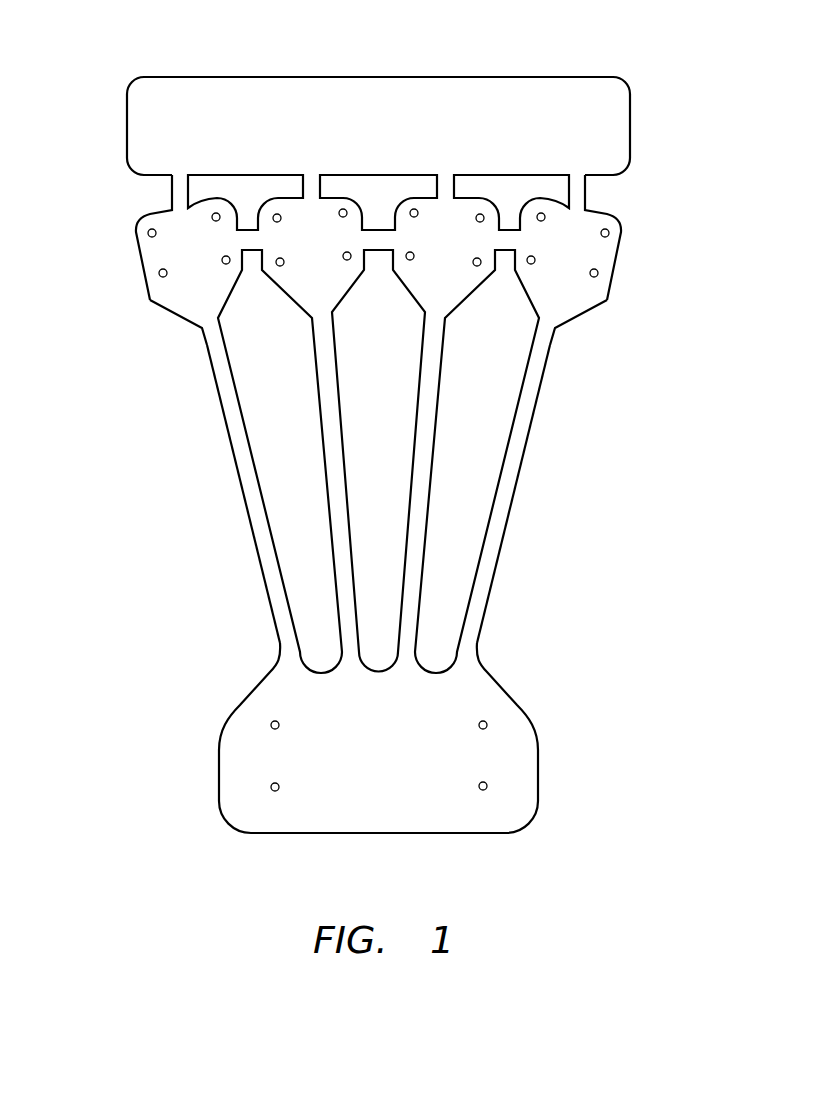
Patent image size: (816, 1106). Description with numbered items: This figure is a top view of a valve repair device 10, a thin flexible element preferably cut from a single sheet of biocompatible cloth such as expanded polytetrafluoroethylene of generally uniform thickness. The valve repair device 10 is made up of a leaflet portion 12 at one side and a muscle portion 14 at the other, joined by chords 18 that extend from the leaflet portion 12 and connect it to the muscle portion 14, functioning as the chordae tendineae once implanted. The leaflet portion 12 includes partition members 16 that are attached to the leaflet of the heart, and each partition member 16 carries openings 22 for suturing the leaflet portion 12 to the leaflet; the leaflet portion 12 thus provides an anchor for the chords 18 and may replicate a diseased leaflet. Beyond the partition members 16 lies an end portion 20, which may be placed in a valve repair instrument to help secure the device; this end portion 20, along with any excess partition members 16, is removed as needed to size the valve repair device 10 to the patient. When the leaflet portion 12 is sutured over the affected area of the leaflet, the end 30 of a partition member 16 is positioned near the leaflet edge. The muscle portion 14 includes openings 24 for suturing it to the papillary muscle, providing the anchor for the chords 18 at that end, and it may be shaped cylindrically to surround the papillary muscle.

The valve repair device 10 is at (385, 423).
The leaflet portion 12 is at (638, 213).
The muscle portion 14 is at (200, 768).
The partition member 16 is at (313, 237).
The chords 18 is at (332, 473).
The end portion 20 is at (532, 124).
The openings 22 is at (150, 230).
The openings 24 is at (487, 725).
The end 30 is at (558, 327).